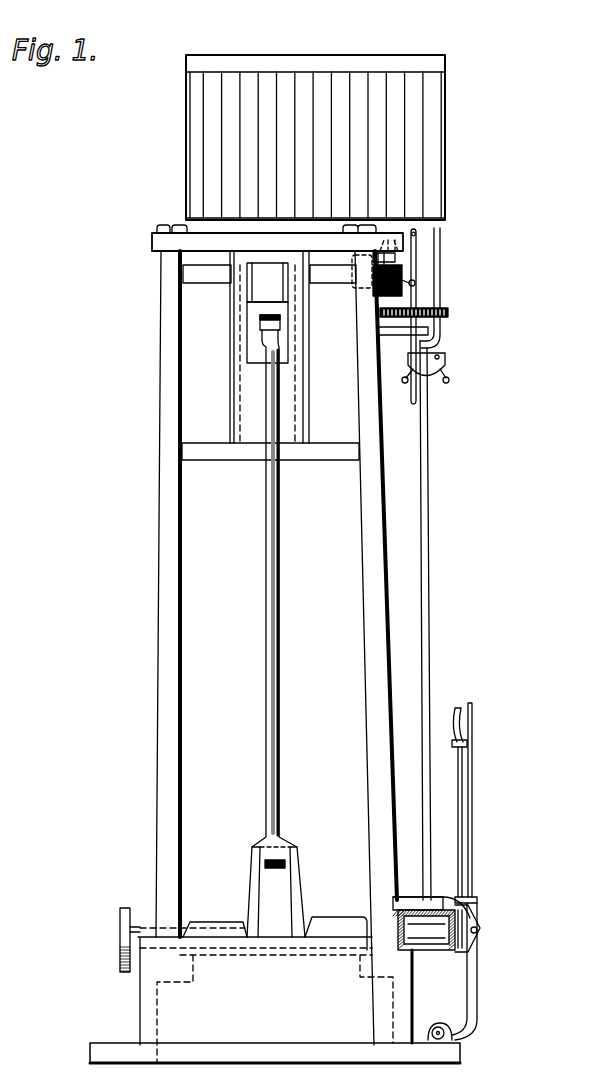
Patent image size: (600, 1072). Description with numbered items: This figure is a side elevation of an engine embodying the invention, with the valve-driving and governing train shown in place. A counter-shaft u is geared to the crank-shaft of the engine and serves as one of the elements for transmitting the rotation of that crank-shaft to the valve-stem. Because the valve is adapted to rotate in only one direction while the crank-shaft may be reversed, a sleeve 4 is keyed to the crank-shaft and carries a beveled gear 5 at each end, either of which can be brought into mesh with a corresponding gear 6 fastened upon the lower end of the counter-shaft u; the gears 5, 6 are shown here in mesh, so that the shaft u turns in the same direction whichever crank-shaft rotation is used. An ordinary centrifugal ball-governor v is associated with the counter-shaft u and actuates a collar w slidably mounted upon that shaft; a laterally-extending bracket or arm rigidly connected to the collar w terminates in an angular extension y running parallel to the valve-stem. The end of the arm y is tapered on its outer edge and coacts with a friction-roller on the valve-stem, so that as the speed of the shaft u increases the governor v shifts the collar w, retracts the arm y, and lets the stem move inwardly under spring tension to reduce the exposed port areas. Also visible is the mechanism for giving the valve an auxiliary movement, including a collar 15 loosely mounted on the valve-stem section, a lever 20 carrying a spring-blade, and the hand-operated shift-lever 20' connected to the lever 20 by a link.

The sleeve 4 is at (428, 951).
The beveled gear 5 is at (448, 948).
The gear 6 is at (400, 912).
The collar 15 is at (404, 280).
The lever 20 is at (428, 293).
The hand-operated shift-lever 20' is at (455, 264).
The counter-shaft u is at (431, 455).
The governor v is at (438, 316).
The collar w is at (433, 362).
The angular extension y is at (440, 273).